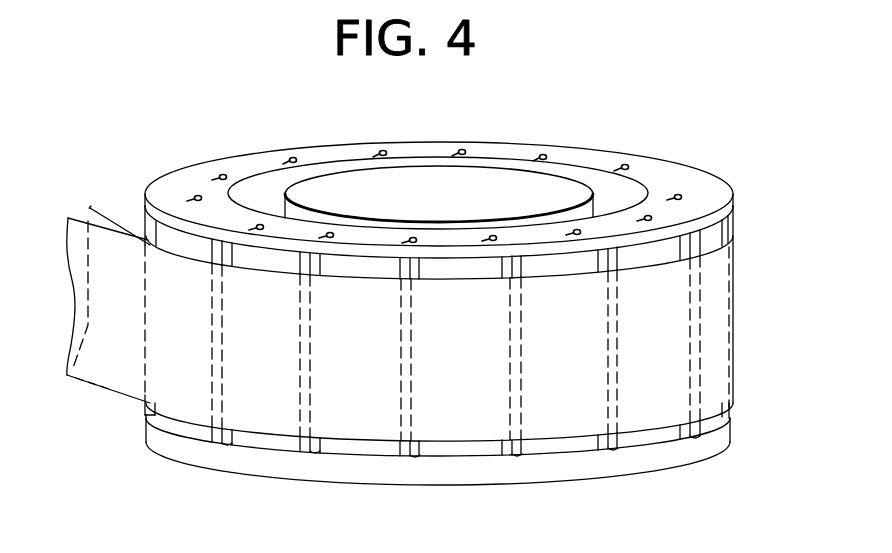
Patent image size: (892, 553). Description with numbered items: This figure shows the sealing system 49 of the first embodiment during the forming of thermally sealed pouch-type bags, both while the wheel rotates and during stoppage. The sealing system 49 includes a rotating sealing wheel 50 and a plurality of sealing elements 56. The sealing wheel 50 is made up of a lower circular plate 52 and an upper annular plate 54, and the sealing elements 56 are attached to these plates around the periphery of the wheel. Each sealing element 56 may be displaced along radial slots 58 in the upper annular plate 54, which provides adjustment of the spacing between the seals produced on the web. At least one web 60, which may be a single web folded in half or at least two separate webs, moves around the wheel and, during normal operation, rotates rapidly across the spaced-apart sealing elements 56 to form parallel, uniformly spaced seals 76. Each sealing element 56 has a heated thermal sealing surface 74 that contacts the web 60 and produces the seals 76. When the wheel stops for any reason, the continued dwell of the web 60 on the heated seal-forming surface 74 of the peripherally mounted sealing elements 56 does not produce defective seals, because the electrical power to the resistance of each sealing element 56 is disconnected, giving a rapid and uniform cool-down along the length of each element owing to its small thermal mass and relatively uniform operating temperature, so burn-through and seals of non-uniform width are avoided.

The sealing system 49 is at (419, 496).
The sealing wheel 50 is at (560, 125).
The lower circular plate 52 is at (360, 455).
The upper annular plate 54 is at (184, 186).
The sealing element 56 is at (206, 431).
The radial slot 58 is at (203, 197).
The web 60 is at (100, 360).
The thermal sealing surface 74 is at (299, 441).
The seal 76 is at (224, 370).